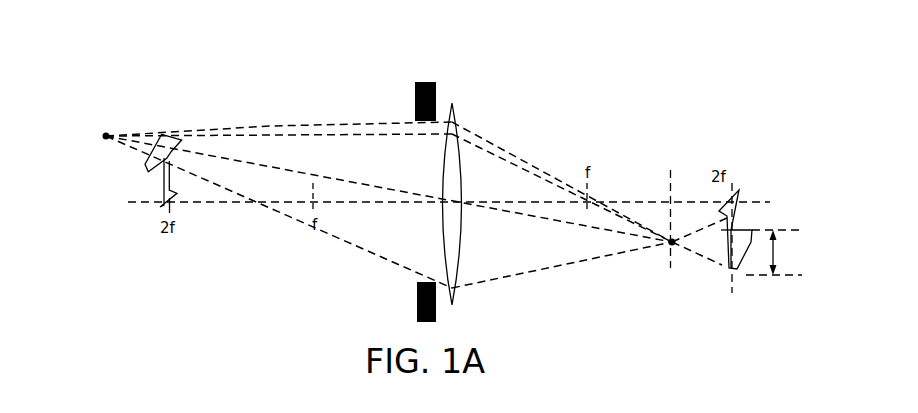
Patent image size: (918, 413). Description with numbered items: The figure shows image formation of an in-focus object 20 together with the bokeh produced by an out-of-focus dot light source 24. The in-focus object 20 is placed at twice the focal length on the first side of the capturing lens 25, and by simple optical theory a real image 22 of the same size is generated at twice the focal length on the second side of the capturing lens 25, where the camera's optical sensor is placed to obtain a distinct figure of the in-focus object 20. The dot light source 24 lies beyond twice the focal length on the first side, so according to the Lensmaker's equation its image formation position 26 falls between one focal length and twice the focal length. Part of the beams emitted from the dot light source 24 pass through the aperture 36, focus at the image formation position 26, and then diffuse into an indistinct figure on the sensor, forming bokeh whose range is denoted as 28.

The in-focus object 20 is at (173, 192).
The real image 22 is at (722, 258).
The dot light source 24 is at (105, 134).
The capturing lens 25 is at (457, 114).
The image formation position 26 is at (670, 163).
The range of the indistinct figure 28 is at (774, 252).
The aperture 36 is at (415, 80).